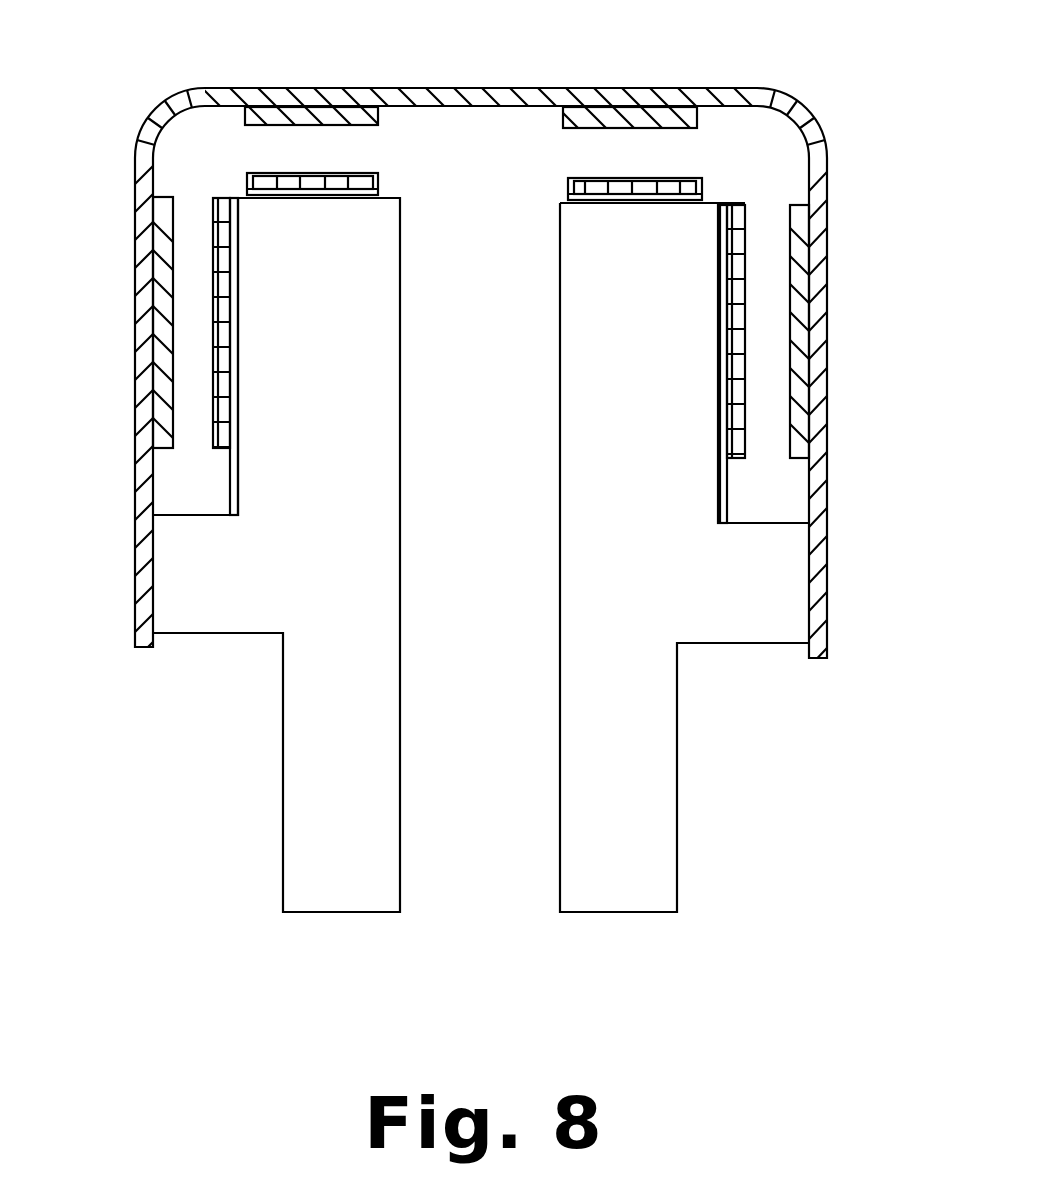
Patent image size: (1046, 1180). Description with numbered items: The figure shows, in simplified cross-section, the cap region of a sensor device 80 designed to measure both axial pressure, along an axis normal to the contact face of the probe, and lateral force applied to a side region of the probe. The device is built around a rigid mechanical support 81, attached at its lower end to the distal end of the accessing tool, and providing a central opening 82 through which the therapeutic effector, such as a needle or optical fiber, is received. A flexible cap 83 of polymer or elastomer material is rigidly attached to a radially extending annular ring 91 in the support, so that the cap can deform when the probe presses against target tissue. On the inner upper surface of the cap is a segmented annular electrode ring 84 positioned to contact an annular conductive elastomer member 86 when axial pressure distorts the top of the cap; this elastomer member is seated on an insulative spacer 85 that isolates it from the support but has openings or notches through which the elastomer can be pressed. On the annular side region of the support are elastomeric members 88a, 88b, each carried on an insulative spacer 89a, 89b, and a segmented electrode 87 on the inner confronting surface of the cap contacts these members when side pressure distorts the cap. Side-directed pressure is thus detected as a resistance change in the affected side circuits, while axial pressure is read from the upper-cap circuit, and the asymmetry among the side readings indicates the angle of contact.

The sensor device 80 is at (874, 109).
The rigid mechanical support 81 is at (680, 703).
The central opening 82 is at (403, 640).
The flexible cap 83 is at (828, 573).
The segmented annular electrode ring 84 is at (372, 126).
The insulative spacer 85 is at (250, 193).
The annular conductive elastomer member 86 is at (290, 182).
The segmented electrode 87 is at (165, 432).
The elastomeric member 88a is at (743, 267).
The elastomeric member 88b is at (220, 253).
The insulative spacer 89a is at (722, 267).
The insulative spacer 89b is at (238, 426).
The annular ring 91 is at (231, 600).